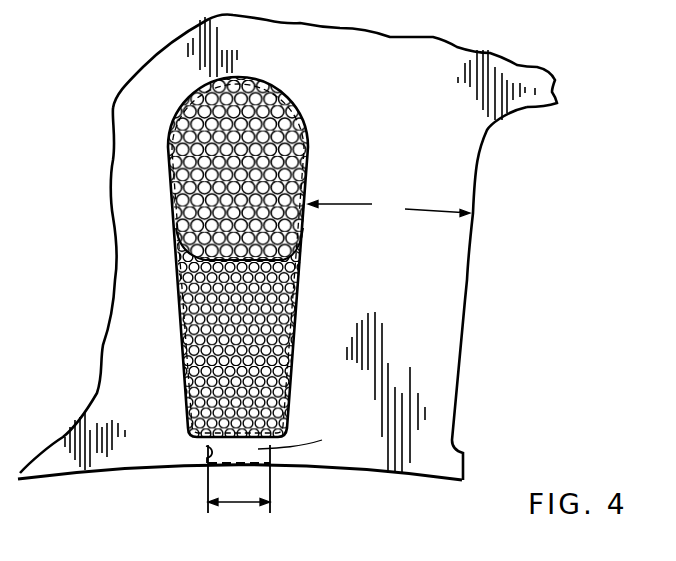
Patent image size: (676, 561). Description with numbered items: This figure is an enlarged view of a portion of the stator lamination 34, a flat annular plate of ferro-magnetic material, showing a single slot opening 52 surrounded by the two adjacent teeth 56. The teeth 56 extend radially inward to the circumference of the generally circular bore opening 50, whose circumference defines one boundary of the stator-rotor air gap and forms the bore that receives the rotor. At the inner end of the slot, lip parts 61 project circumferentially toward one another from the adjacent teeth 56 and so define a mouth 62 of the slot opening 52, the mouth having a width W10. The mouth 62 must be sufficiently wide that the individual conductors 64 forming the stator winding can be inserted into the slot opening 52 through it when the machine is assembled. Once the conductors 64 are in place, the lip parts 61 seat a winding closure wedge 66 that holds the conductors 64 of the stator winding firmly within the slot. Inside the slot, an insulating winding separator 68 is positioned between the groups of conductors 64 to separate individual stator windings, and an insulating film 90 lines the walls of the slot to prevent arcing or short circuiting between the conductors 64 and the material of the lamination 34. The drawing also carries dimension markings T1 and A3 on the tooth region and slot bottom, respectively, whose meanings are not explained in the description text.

The stator lamination 34 is at (158, 62).
The insulating film 90 is at (284, 98).
The conductors 64 is at (288, 143).
The thickness dimension T1 is at (389, 208).
The insulating winding separator 68 is at (298, 257).
The teeth 56 is at (140, 250).
The slot opening 52 is at (190, 367).
The mouth 62 is at (205, 447).
The area A3 is at (304, 433).
The lip parts 61 is at (205, 457).
The winding closure wedge 66 is at (229, 438).
The mouth width W10 is at (243, 505).
The bore opening 50 is at (373, 478).